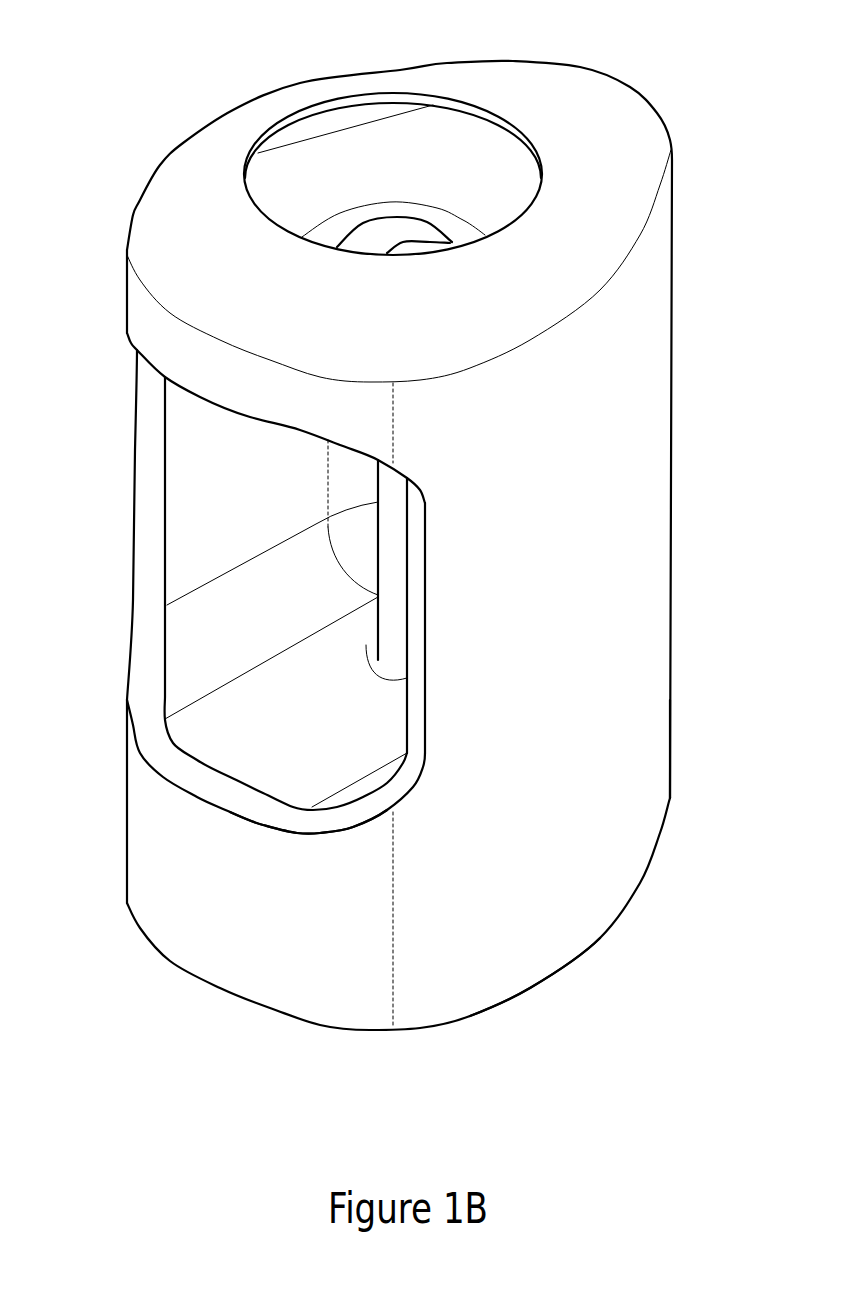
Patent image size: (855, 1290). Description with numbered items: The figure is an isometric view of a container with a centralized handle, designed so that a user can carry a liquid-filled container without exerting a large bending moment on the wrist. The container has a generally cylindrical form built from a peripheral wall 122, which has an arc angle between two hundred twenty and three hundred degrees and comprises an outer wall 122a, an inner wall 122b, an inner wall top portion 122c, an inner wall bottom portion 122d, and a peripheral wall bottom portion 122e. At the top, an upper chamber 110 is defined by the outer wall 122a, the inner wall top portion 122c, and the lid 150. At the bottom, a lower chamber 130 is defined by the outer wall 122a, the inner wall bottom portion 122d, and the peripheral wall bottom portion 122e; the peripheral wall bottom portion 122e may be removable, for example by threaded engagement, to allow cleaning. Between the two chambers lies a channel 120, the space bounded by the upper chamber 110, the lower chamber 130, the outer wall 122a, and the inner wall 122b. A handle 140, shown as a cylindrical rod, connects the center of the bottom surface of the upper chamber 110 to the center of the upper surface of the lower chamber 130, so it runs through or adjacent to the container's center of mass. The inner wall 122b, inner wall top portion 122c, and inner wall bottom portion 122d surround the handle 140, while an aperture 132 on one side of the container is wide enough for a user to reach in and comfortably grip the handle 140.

The upper chamber 110 is at (112, 227).
The channel 120 is at (705, 430).
The peripheral wall 122 is at (398, 803).
The outer wall 122a is at (637, 847).
The inner wall 122b is at (368, 527).
The inner wall top portion 122c is at (273, 433).
The inner wall bottom portion 122d is at (303, 783).
The peripheral wall bottom portion 122e is at (538, 985).
The lower chamber 130 is at (112, 747).
The aperture 132 is at (112, 347).
The handle 140 is at (390, 640).
The lid 150 is at (508, 78).